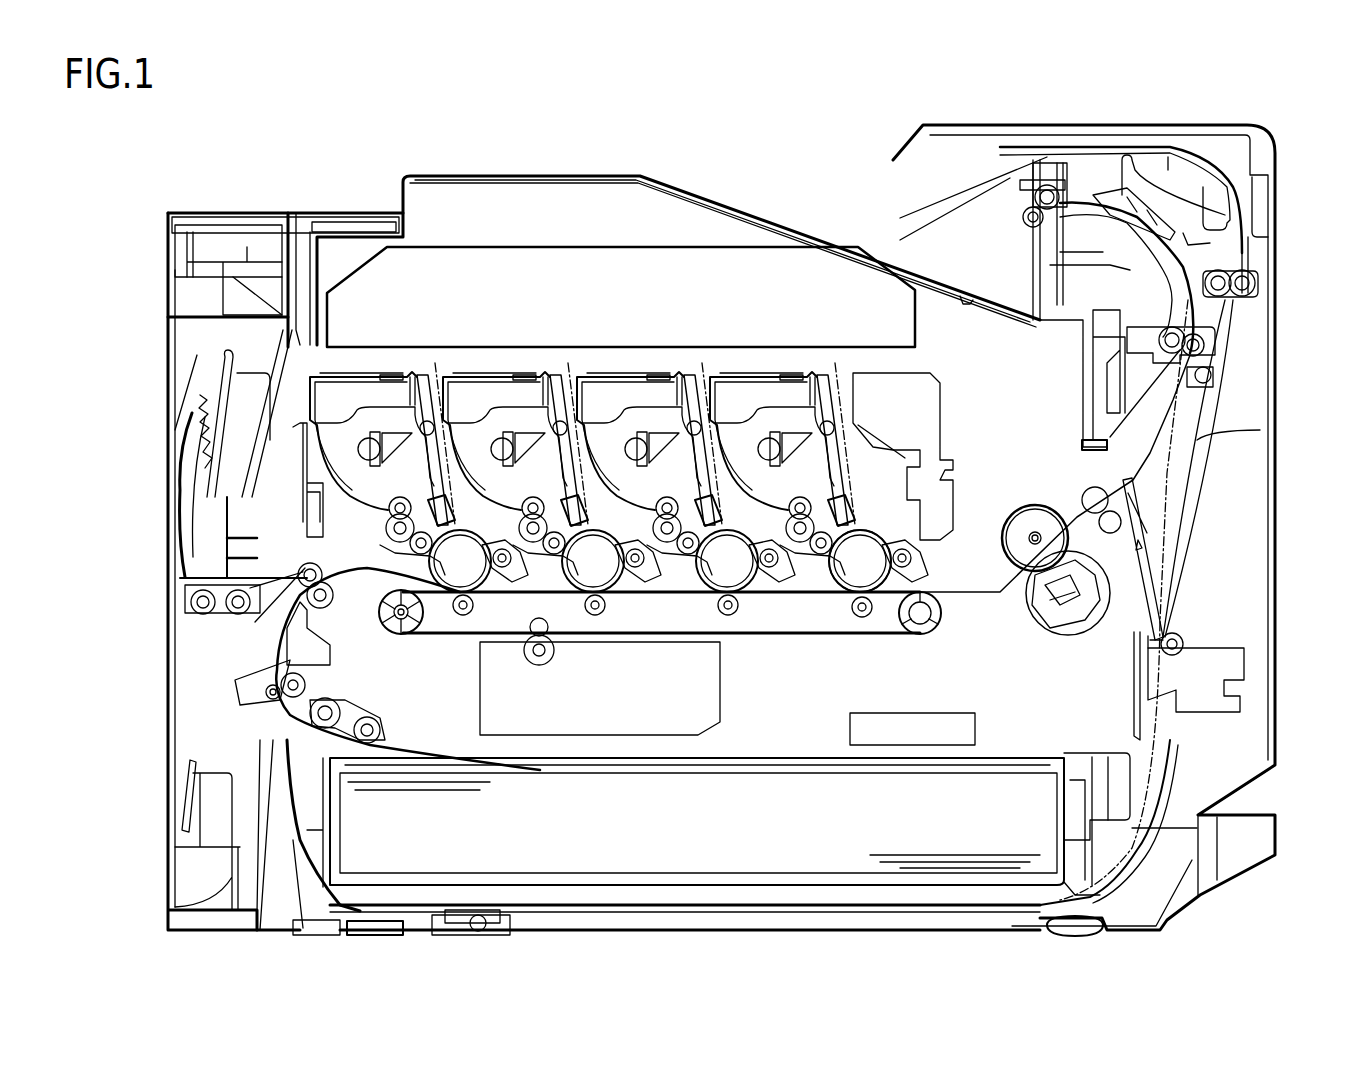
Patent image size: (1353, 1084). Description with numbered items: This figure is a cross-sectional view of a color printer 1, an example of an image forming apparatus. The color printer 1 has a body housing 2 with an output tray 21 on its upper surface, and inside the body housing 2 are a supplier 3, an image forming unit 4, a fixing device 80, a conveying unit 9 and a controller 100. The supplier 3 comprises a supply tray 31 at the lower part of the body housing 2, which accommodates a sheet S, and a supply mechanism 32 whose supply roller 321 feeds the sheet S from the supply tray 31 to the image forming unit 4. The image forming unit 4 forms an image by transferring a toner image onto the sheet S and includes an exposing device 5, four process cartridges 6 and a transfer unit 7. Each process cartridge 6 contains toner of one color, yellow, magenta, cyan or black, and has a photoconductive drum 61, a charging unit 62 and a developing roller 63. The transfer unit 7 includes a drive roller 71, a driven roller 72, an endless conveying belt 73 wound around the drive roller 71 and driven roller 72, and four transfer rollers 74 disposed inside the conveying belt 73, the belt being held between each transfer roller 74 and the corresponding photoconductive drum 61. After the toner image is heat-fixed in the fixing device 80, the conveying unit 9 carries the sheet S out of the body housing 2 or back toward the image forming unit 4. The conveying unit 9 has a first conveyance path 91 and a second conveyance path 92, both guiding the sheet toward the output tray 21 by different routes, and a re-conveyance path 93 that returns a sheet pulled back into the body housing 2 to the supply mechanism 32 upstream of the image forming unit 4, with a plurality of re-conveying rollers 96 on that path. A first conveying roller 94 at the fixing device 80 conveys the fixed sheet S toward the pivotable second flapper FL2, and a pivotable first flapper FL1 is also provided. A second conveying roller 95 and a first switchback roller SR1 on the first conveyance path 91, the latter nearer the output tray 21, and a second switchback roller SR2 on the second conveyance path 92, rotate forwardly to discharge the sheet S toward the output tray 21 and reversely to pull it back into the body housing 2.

The color printer 1 is at (168, 172).
The body housing 2 is at (264, 210).
The supplier 3 is at (315, 805).
The image forming unit 4 is at (325, 357).
The exposing device 5 is at (473, 245).
The process cartridge 6 is at (393, 362).
The transfer unit 7 is at (770, 660).
The conveying unit 9 is at (1210, 551).
The output tray 21 is at (712, 188).
The supply tray 31 is at (808, 757).
The supply mechanism 32 is at (258, 705).
The supply roller 321 is at (255, 697).
The photoconductive drum 61 is at (856, 597).
The charging unit 62 is at (892, 470).
The developing roller 63 is at (815, 596).
The drive roller 71 is at (915, 635).
The driven roller 72 is at (416, 628).
The conveying belt 73 is at (470, 640).
The transfer roller 74 is at (582, 606).
The fixing device 80 is at (1003, 621).
The first conveyance path 91 is at (1143, 256).
The second conveyance path 92 is at (1247, 362).
The re-conveyance path 93 is at (1151, 858).
The first conveying roller 94 is at (1122, 522).
The second conveying roller 95 is at (1200, 340).
The re-conveying roller 96 is at (1185, 645).
The controller 100 is at (978, 727).
The sheet S is at (912, 217).
The first switchback roller SR1 is at (1030, 208).
The second switchback roller SR2 is at (1255, 283).
The first flapper FL1 is at (1140, 497).
The second flapper FL2 is at (1205, 440).